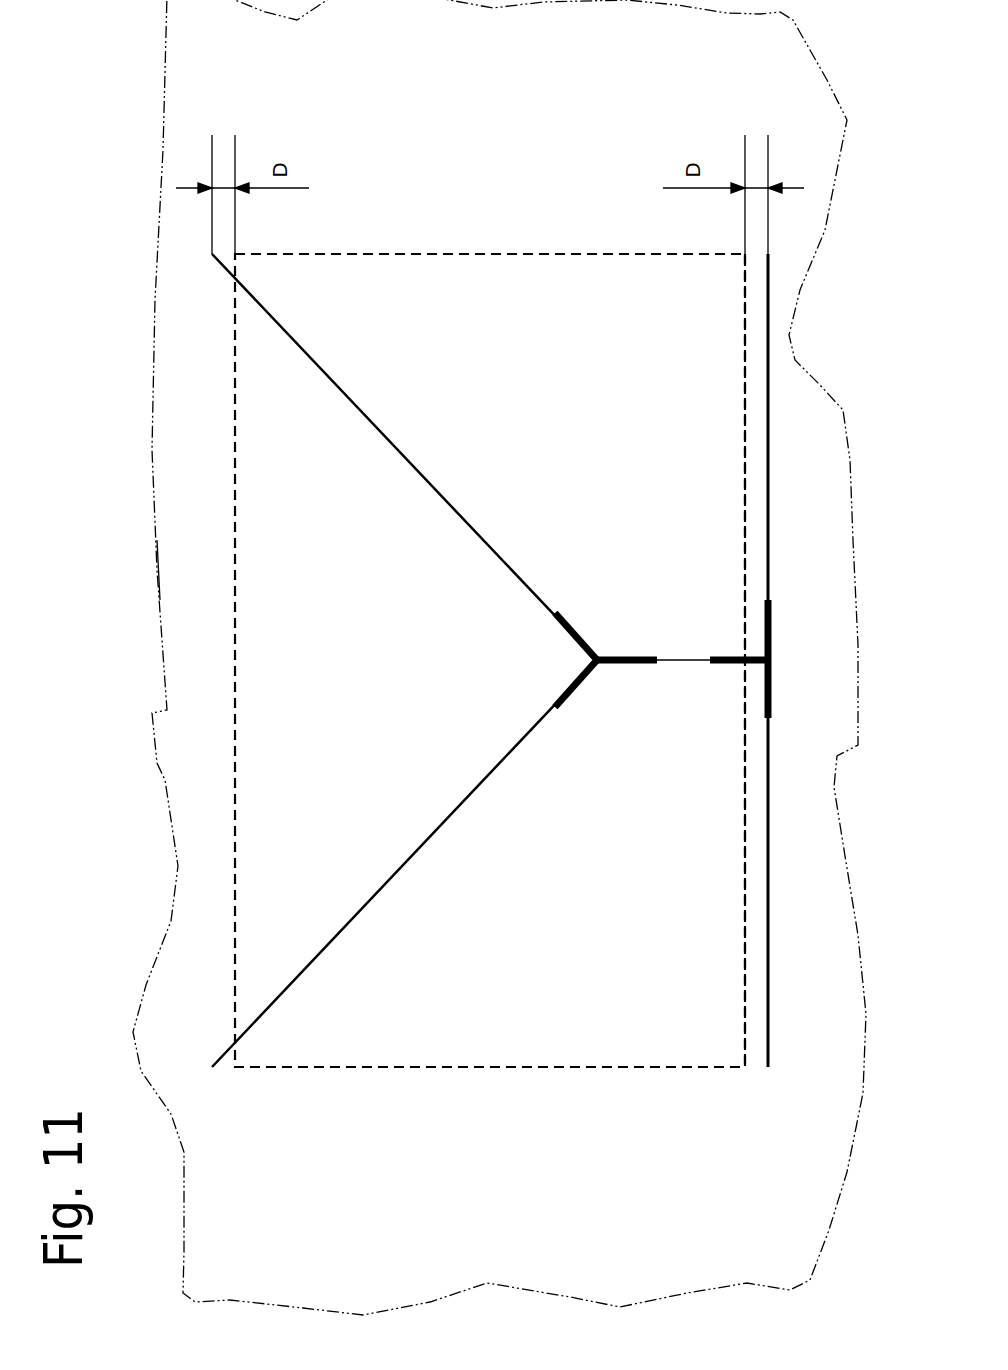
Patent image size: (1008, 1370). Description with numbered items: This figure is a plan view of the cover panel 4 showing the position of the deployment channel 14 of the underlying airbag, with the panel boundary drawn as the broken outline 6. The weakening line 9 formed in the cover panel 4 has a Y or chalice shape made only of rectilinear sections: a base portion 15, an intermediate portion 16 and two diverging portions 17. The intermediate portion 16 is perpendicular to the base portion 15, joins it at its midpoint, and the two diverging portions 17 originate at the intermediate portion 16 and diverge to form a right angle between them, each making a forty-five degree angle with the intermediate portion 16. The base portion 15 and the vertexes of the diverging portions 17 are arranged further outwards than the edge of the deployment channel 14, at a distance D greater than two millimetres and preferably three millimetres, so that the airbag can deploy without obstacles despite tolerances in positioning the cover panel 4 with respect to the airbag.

The substrate 6 is at (99, 139).
The cover panel 4 is at (197, 563).
The weakening line 9 is at (236, 758).
The deployment channel 14 is at (745, 851).
The base portion 15 is at (728, 508).
The intermediate portion 16 is at (675, 728).
The diverging portions 17 is at (403, 390).